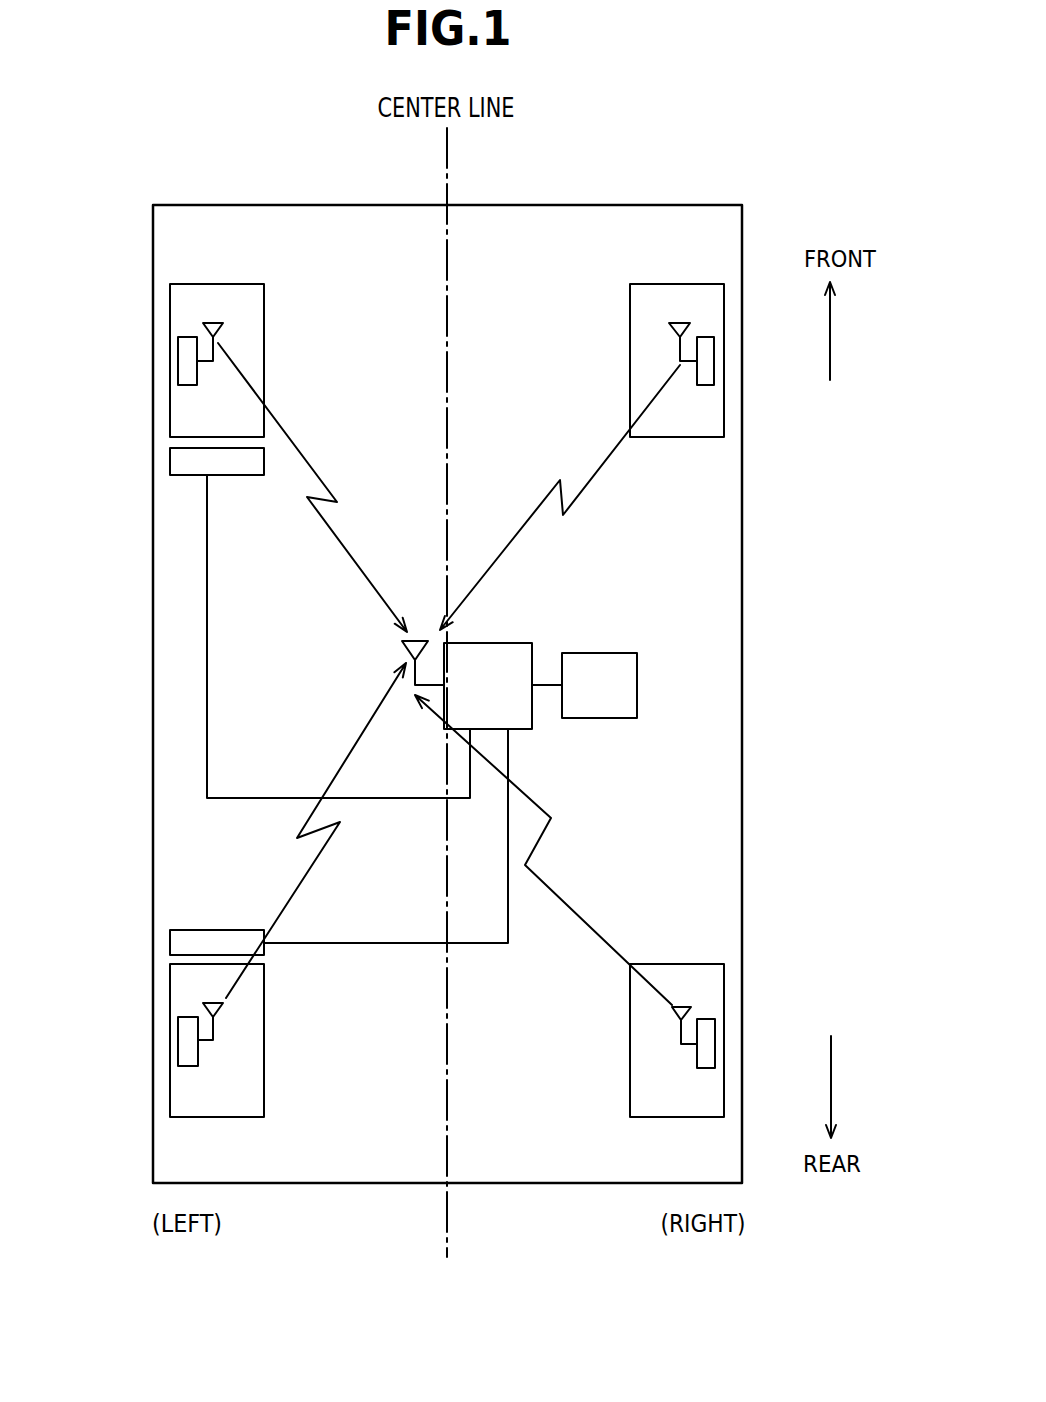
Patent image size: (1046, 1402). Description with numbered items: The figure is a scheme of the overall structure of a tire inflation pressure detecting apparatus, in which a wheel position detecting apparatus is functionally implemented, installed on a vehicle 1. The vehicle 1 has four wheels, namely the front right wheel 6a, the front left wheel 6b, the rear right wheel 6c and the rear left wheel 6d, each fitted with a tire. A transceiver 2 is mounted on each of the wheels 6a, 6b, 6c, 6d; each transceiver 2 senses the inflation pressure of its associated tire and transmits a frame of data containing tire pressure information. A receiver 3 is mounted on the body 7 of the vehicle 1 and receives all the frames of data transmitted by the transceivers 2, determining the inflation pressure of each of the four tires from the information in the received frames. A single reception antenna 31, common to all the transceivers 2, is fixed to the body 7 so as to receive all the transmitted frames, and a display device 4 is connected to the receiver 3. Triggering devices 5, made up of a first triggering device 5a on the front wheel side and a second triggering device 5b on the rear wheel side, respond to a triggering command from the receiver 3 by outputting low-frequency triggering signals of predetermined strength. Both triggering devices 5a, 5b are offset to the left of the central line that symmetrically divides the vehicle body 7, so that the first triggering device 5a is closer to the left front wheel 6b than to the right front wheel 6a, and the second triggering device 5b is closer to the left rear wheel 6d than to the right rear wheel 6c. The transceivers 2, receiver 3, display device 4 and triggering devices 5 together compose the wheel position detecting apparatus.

The vehicle 1 is at (646, 192).
The transceiver 2 is at (185, 337).
The receiver 3 is at (488, 643).
The reception antenna 31 is at (400, 657).
The display device 4 is at (600, 718).
The triggering devices 5 is at (80, 595).
The first triggering device 5a is at (170, 458).
The second triggering device 5b is at (170, 943).
The front right wheel 6a is at (677, 285).
The front left wheel 6b is at (213, 285).
The rear right wheel 6c is at (677, 1117).
The rear left wheel 6d is at (213, 1117).
The vehicle body 7 is at (742, 620).